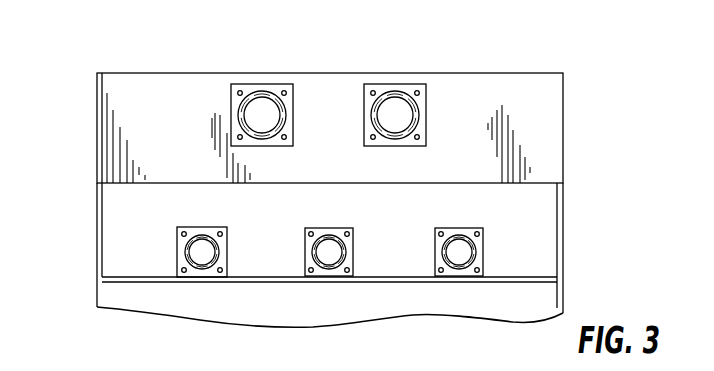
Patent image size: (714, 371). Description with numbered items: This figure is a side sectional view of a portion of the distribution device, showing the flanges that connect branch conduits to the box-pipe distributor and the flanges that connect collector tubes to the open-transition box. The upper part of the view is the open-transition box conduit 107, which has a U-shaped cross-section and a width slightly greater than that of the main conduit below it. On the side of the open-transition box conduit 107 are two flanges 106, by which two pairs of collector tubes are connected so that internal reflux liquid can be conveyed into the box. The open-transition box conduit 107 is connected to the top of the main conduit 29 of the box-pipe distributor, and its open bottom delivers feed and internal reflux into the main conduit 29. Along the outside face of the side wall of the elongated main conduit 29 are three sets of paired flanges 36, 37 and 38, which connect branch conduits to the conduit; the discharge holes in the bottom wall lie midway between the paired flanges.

The main conduit 29 is at (100, 226).
The paired flanges 36 is at (262, 218).
The paired flanges 37 is at (353, 240).
The paired flanges 38 is at (483, 243).
The flanges 106 is at (278, 88).
The open-transition box conduit 107 is at (545, 151).